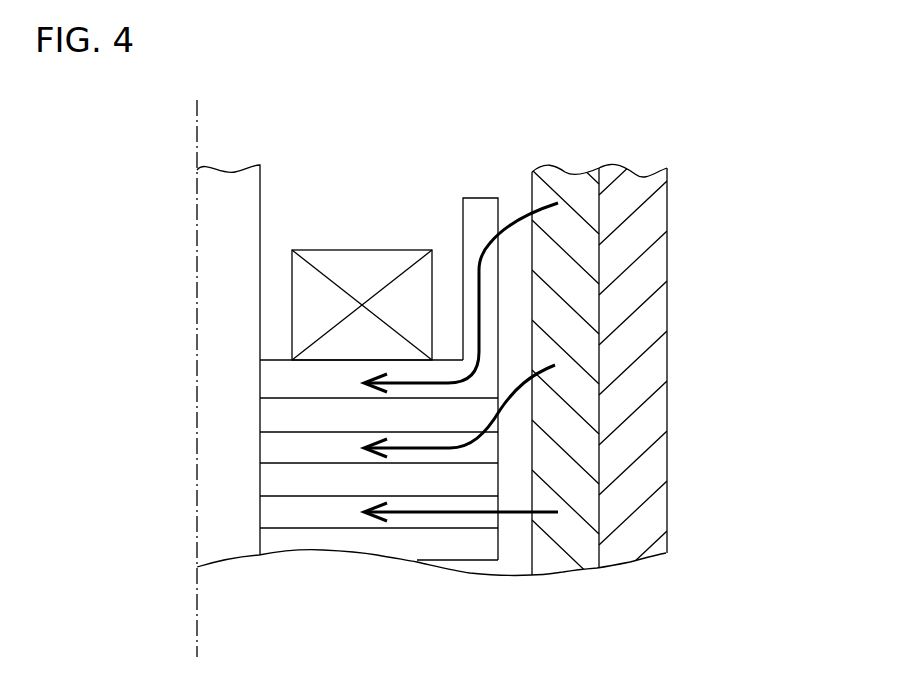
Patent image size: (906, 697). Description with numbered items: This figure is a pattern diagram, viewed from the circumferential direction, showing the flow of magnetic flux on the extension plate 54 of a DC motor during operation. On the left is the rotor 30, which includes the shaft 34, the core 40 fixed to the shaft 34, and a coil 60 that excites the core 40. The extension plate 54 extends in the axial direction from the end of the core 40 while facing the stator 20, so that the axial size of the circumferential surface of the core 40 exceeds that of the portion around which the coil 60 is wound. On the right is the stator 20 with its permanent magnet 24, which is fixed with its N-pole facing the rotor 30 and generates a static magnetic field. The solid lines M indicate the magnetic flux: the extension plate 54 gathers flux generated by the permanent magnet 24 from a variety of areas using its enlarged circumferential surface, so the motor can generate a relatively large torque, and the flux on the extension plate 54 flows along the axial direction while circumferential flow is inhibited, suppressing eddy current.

The shaft 34 is at (229, 183).
The rotor 30 is at (310, 182).
The coil 60 is at (362, 265).
The extension plate 54 is at (482, 208).
The core 40 is at (378, 543).
The permanent magnet 24 is at (565, 186).
The stator 20 is at (648, 352).
The magnetic flux flow M is at (518, 512).